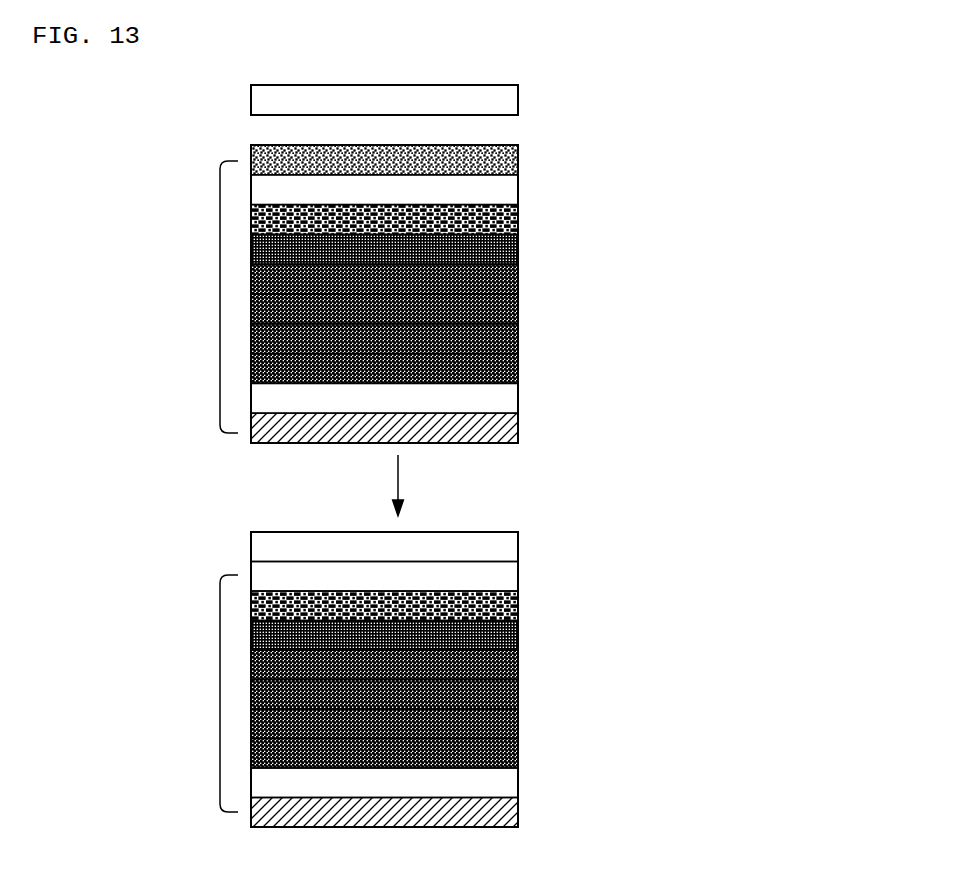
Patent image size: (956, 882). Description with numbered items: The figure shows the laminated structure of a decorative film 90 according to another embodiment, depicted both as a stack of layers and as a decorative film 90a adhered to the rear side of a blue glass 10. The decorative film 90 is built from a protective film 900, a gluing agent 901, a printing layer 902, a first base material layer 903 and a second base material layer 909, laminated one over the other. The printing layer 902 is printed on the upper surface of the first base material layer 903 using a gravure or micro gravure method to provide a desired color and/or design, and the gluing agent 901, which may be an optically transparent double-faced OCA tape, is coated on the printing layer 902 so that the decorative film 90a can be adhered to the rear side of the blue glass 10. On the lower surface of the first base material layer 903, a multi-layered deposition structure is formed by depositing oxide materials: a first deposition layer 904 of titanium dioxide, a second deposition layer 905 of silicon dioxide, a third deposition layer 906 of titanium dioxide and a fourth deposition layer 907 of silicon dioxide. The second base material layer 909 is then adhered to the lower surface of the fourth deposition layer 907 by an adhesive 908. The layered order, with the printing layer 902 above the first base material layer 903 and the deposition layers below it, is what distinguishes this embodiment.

The blue glass 10 is at (518, 101).
The protective film 900 is at (518, 161).
The gluing agent 901 is at (518, 191).
The printing layer 902 is at (518, 221).
The first base material layer 903 is at (518, 251).
The first deposition layer 904 is at (518, 281).
The second deposition layer 905 is at (518, 311).
The third deposition layer 906 is at (518, 341).
The fourth deposition layer 907 is at (518, 371).
The adhesive 908 is at (518, 401).
The second base material layer 909 is at (518, 431).
The decorative film 90 is at (220, 291).
The decorative film 90a is at (220, 685).